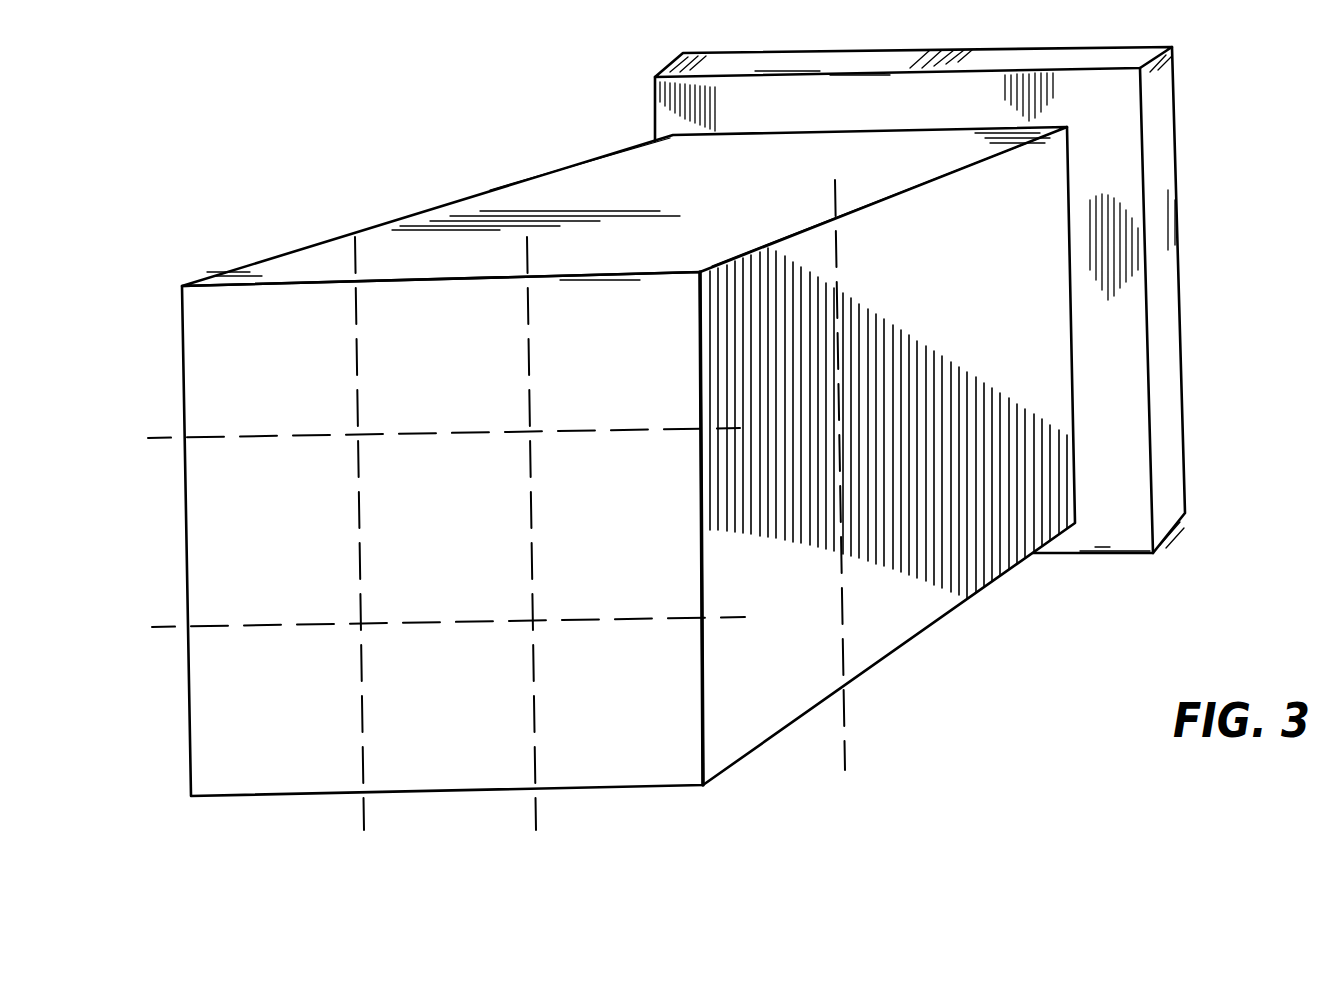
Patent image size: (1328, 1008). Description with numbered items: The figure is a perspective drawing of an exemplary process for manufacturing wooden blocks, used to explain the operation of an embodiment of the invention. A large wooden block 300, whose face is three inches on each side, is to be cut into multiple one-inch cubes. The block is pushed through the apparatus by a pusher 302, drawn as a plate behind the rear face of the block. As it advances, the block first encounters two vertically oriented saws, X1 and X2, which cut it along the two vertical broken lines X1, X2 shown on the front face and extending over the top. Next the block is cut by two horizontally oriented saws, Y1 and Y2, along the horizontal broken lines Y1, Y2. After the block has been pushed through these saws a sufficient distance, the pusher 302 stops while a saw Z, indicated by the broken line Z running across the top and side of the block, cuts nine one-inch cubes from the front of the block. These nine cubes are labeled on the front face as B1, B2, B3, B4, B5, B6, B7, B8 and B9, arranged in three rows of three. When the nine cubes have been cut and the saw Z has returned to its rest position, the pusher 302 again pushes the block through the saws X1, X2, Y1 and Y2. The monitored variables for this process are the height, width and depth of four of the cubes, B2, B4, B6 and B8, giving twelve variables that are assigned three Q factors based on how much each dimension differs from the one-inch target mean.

The three-dimensional block memory volume 300 is at (470, 195).
The pusher 302 is at (1165, 537).
The cube B1 is at (277, 368).
The cube B2 is at (439, 367).
The cube B3 is at (603, 365).
The cube B4 is at (278, 544).
The cube B5 is at (439, 535).
The cube B6 is at (613, 532).
The cube B7 is at (281, 711).
The cube B8 is at (449, 711).
The cube B9 is at (617, 711).
The vertically oriented saw X1 is at (363, 822).
The vertically oriented saw X2 is at (535, 816).
The horizontally oriented saw Y1 is at (170, 632).
The horizontally oriented saw Y2 is at (166, 444).
The saw Z is at (847, 758).